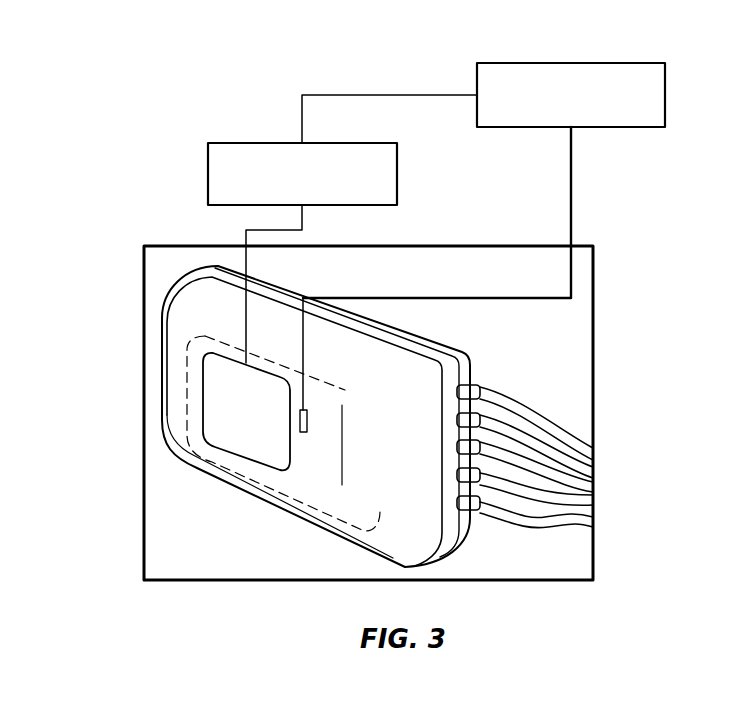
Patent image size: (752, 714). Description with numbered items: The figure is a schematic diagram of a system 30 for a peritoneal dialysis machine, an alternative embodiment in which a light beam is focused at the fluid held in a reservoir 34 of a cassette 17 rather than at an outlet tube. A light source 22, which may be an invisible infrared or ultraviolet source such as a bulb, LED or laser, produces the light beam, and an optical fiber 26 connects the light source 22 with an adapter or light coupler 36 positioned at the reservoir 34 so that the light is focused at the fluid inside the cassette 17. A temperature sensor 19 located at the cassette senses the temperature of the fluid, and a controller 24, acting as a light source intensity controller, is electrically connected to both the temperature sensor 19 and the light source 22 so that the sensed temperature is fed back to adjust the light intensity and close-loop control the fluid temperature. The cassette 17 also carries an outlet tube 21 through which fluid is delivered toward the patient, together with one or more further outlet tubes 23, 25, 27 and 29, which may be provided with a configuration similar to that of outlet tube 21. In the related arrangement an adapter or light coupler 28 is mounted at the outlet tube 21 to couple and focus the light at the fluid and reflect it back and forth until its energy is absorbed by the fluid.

The system 30 is at (121, 50).
The cassette 17 is at (167, 246).
The light source 22 is at (231, 143).
The controller 24 is at (633, 63).
The optical fiber 26 is at (303, 209).
The temperature sensor 19 is at (306, 396).
The reservoir 34 is at (197, 395).
The light coupler 36 is at (245, 472).
The outlet tube 21 is at (458, 404).
The outlet tube 23 is at (457, 431).
The outlet tube 25 is at (458, 455).
The outlet tube 27 is at (456, 485).
The outlet tube 29 is at (456, 510).
The light coupler 28 is at (537, 411).